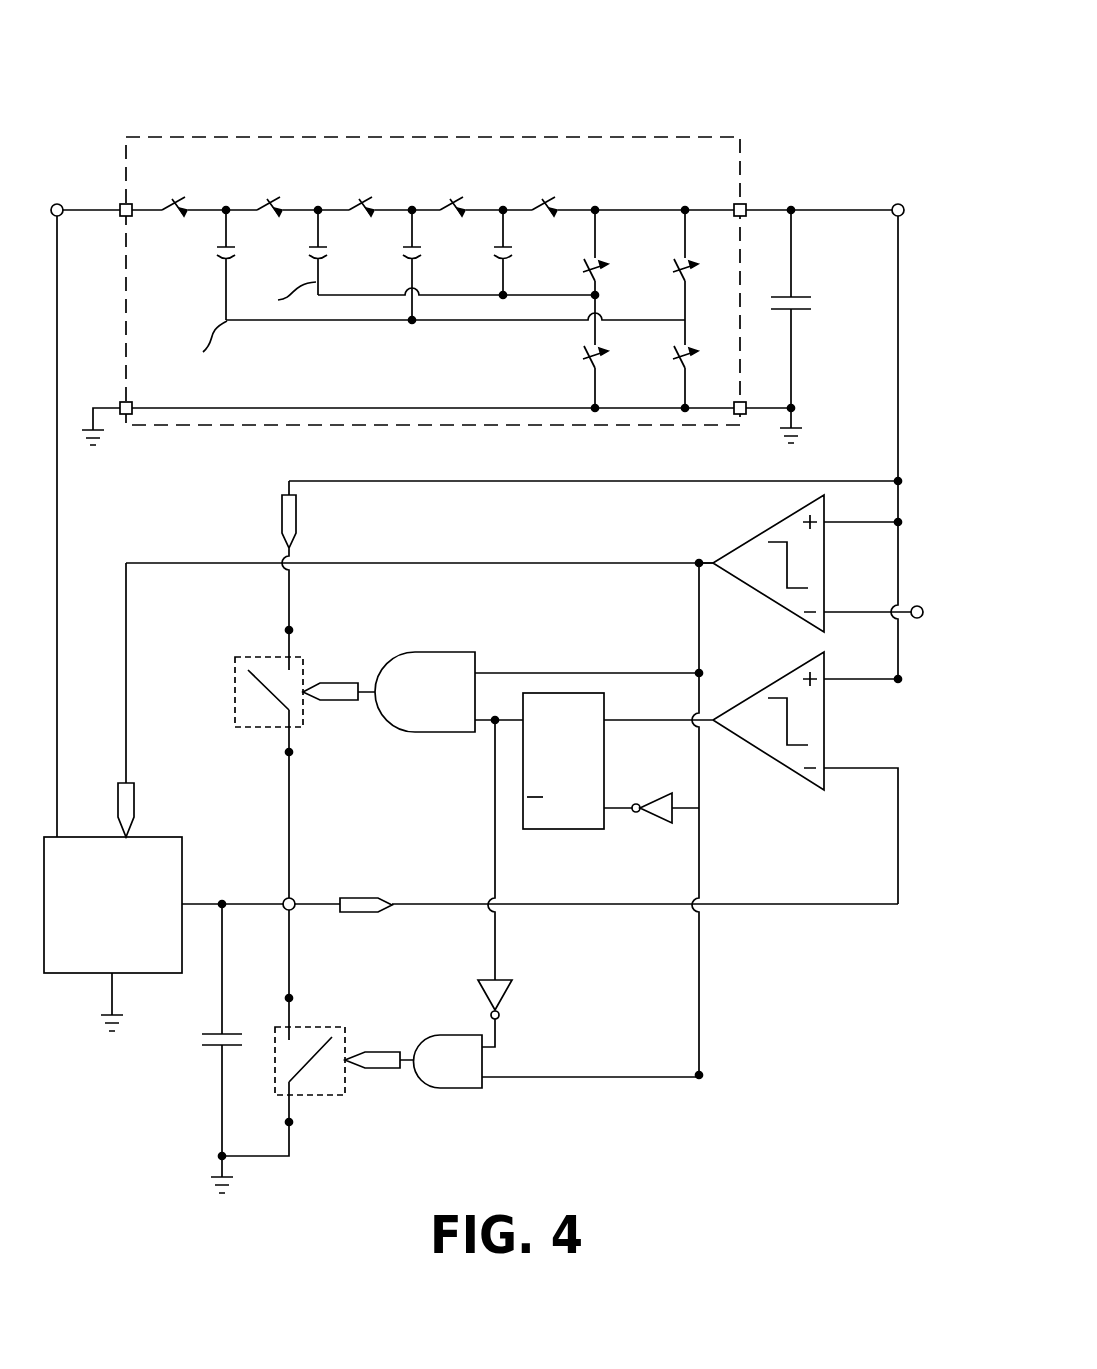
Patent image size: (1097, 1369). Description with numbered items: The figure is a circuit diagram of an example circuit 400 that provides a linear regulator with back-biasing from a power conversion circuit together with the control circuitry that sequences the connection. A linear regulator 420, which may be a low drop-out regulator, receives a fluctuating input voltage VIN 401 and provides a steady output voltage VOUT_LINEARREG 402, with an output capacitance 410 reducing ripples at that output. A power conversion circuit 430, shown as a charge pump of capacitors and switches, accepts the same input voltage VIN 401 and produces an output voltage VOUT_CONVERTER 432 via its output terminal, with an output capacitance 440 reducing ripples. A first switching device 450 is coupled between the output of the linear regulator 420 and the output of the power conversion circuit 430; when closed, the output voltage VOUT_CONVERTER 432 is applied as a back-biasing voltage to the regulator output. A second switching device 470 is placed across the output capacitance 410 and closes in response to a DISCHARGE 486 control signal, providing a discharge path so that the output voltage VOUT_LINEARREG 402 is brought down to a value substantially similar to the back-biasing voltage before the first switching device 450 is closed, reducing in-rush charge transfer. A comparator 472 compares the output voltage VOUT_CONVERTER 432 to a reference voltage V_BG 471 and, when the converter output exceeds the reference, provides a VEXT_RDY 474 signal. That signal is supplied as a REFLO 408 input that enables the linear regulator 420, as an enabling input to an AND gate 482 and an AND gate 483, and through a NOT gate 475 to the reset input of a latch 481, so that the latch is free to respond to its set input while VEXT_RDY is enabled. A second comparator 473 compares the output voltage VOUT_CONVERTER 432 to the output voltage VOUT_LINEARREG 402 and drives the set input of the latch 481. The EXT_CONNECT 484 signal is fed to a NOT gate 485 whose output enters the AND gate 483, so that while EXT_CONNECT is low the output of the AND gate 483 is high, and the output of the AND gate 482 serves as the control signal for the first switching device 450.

The circuit 400 is at (885, 57).
The input voltage VIN 401 is at (60, 190).
The output voltage VOUT_LINEARREG 402 is at (414, 976).
The REFLO input 408 is at (185, 822).
The output capacitance 410 is at (197, 1040).
The linear regulator 420 is at (135, 936).
The power conversion circuit 430 is at (392, 130).
The output voltage VOUT_CONVERTER 432 is at (880, 183).
The output capacitance 440 is at (815, 305).
The first switching device 450 is at (228, 680).
The second switching device 470 is at (312, 1100).
The reference voltage V_BG 471 is at (960, 646).
The comparator 472 is at (879, 577).
The comparator 473 is at (879, 731).
The VEXT_RDY signal 474 is at (688, 557).
The NOT gate 475 is at (645, 822).
The latch 481 is at (603, 758).
The AND gate 482 is at (445, 706).
The AND gate 483 is at (467, 1071).
The EXT_CONNECT signal 484 is at (490, 728).
The NOT gate 485 is at (510, 1000).
The DISCHARGE control signal 486 is at (378, 1073).